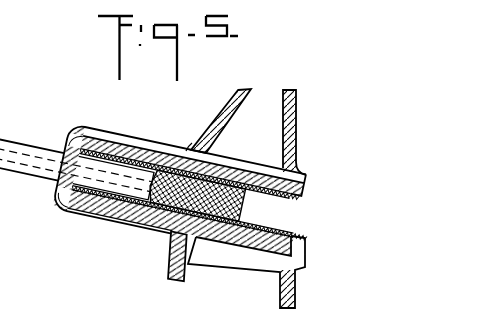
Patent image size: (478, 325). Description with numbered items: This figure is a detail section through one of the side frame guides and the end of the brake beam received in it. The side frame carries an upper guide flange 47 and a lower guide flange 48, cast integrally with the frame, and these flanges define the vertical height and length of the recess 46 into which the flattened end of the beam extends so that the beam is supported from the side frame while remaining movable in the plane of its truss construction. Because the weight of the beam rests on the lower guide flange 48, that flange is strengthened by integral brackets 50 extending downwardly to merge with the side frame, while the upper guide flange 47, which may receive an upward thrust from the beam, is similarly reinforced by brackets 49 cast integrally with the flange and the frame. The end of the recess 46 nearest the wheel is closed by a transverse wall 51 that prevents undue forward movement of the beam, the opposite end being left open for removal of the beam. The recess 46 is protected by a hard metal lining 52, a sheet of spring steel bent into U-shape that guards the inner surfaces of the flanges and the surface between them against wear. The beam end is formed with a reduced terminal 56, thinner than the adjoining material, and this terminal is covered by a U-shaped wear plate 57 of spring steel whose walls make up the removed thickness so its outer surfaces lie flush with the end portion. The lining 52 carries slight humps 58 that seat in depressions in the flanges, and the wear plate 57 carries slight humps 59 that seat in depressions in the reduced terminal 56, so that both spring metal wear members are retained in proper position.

The recess 46 is at (287, 218).
The upper guide flange 47 is at (308, 193).
The lower guide flange 48 is at (138, 232).
The reinforcing brackets 49 is at (281, 136).
The integral brackets 50 is at (186, 266).
The transverse wall 51 is at (63, 147).
The hard metal lining 52 is at (289, 241).
The reduced terminal 56 is at (120, 222).
The U-shaped wear plate 57 is at (161, 237).
The humps 58 is at (104, 157).
The humps 59 is at (191, 155).